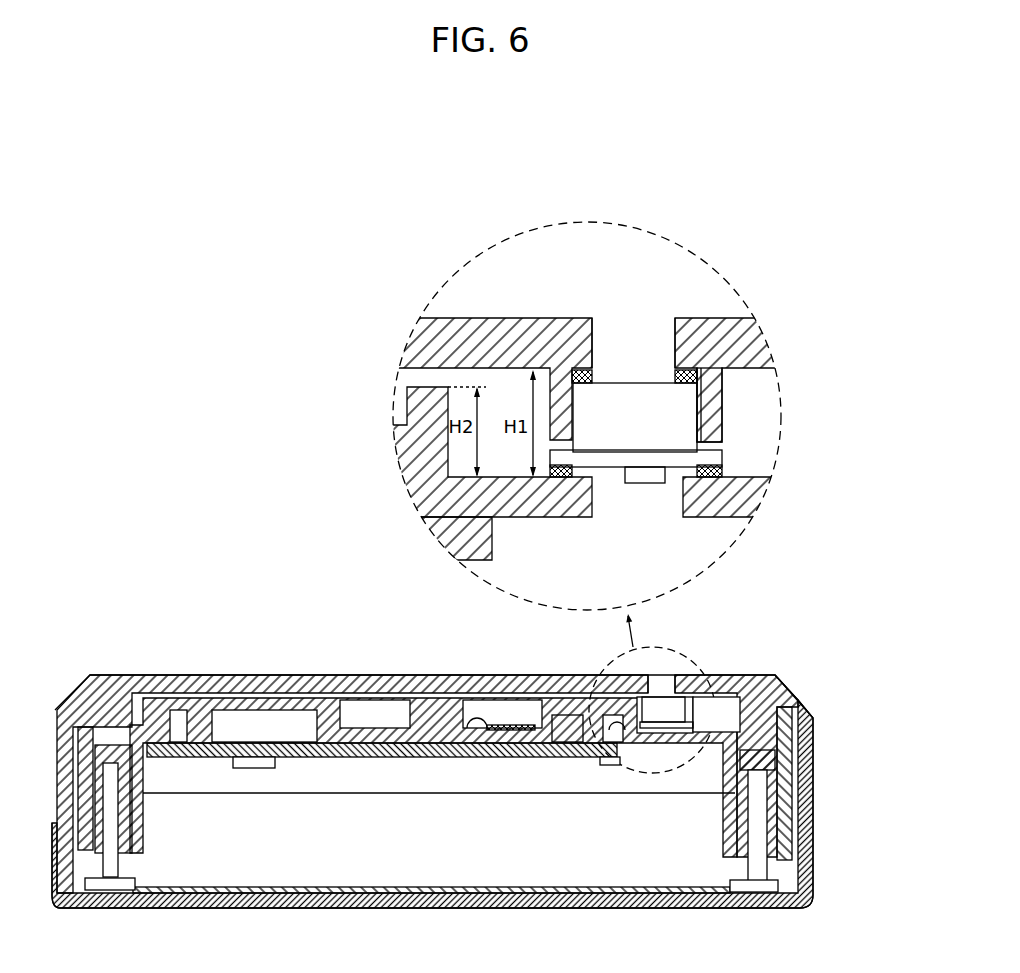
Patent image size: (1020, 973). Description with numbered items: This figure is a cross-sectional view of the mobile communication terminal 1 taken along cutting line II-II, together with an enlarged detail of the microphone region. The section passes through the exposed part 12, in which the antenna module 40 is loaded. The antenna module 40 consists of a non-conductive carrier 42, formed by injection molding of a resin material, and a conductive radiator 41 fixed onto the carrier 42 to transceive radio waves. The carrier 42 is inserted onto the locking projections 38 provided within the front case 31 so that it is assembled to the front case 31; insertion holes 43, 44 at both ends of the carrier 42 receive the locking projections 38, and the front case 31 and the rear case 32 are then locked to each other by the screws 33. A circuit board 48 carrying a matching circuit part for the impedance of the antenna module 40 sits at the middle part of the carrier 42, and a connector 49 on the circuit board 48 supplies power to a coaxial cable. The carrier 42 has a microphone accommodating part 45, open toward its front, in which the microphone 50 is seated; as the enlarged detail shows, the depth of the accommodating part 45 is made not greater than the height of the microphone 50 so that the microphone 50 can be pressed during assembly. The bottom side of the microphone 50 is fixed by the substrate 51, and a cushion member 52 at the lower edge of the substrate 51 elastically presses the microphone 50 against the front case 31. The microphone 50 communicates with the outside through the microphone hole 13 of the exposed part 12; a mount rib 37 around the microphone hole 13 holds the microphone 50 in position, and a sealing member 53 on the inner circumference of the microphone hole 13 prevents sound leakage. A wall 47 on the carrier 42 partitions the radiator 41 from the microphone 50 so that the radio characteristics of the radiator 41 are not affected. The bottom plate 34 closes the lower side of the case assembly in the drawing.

The mobile communication terminal 1 is at (157, 617).
The exposed part 12 is at (472, 318).
The microphone hole 13 is at (668, 344).
The front case 31 is at (805, 813).
The rear case 32 is at (803, 758).
The screws 33 is at (756, 875).
The bottom plate 34 is at (812, 883).
The mount rib 37 is at (705, 415).
The locking projections 38 is at (760, 728).
The antenna module 40 is at (391, 724).
The radiator 41 is at (463, 735).
The carrier 42 is at (379, 760).
The insertion hole 43 is at (95, 826).
The insertion hole 44 is at (776, 882).
The microphone accommodating part 45 is at (488, 477).
The wall 47 is at (417, 453).
The circuit board 48 is at (193, 757).
The connector 49 is at (260, 770).
The microphone 50 is at (680, 417).
The substrate 51 is at (710, 458).
The cushion member 52 is at (712, 473).
The sealing member 53 is at (700, 362).